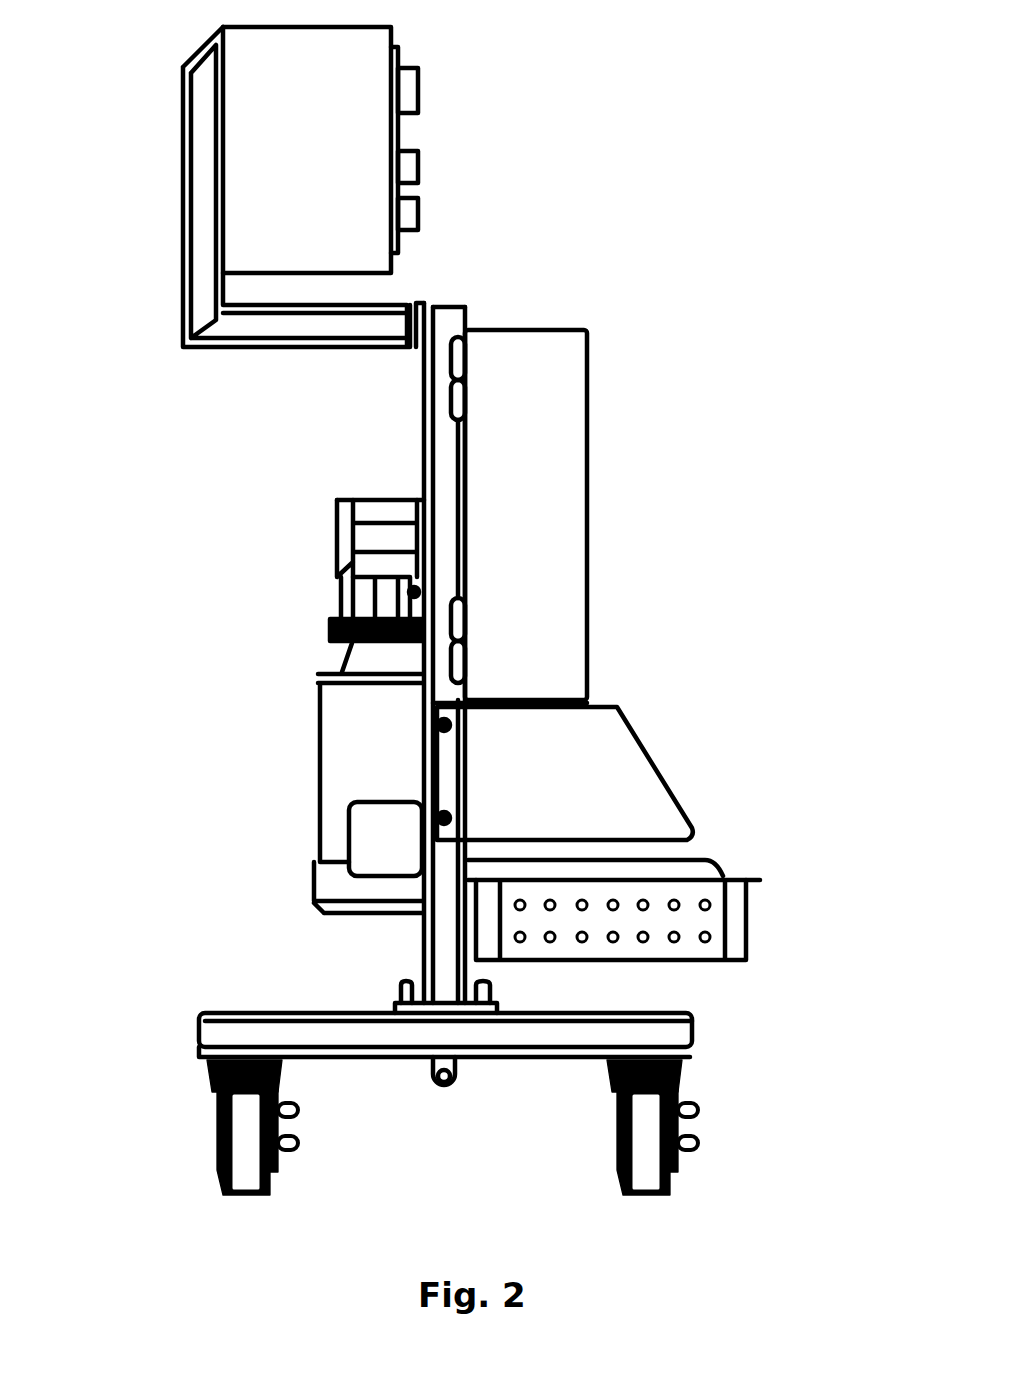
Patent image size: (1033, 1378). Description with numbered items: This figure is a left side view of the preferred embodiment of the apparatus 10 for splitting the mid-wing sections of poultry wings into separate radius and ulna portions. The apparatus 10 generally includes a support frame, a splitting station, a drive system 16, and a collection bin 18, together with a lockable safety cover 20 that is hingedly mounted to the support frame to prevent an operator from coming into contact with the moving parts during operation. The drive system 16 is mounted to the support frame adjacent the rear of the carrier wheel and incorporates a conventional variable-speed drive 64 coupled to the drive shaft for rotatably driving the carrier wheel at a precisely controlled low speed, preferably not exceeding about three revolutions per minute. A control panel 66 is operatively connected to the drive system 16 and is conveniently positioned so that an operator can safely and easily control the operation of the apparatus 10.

The apparatus 10 is at (826, 134).
The control panel 66 is at (290, 136).
The lockable safety cover 20 is at (535, 490).
The drive system 16 is at (333, 563).
The variable-speed drive 64 is at (355, 722).
The collection bin 18 is at (733, 920).